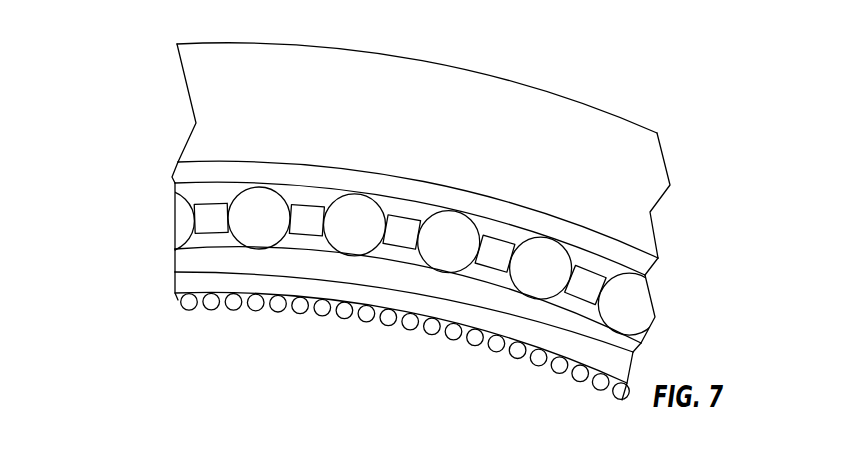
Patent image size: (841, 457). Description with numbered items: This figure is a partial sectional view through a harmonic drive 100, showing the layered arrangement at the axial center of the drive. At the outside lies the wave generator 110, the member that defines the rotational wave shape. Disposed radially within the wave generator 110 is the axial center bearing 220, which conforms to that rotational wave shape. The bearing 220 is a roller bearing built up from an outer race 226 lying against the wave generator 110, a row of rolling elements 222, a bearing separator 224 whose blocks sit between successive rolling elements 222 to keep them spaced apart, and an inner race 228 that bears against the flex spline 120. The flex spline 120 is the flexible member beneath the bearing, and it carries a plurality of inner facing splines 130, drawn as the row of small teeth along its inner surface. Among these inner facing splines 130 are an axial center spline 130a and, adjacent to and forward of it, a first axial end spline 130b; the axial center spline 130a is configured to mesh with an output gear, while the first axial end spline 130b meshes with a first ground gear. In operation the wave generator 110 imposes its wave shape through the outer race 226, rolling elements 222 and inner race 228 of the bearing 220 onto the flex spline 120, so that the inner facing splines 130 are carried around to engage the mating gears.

The tire assembly 100 is at (125, 92).
The wave generator 110 is at (528, 110).
The flex spline 120 is at (540, 365).
The inner facing splines 130 is at (402, 364).
The axial center spline 130a is at (455, 340).
The first axial end spline 130b is at (503, 350).
The axial center bearing 220 is at (402, 280).
The rolling elements 222 is at (432, 257).
The bearing separator 224 is at (593, 282).
The outer race 226 is at (517, 218).
The inner race 228 is at (608, 342).